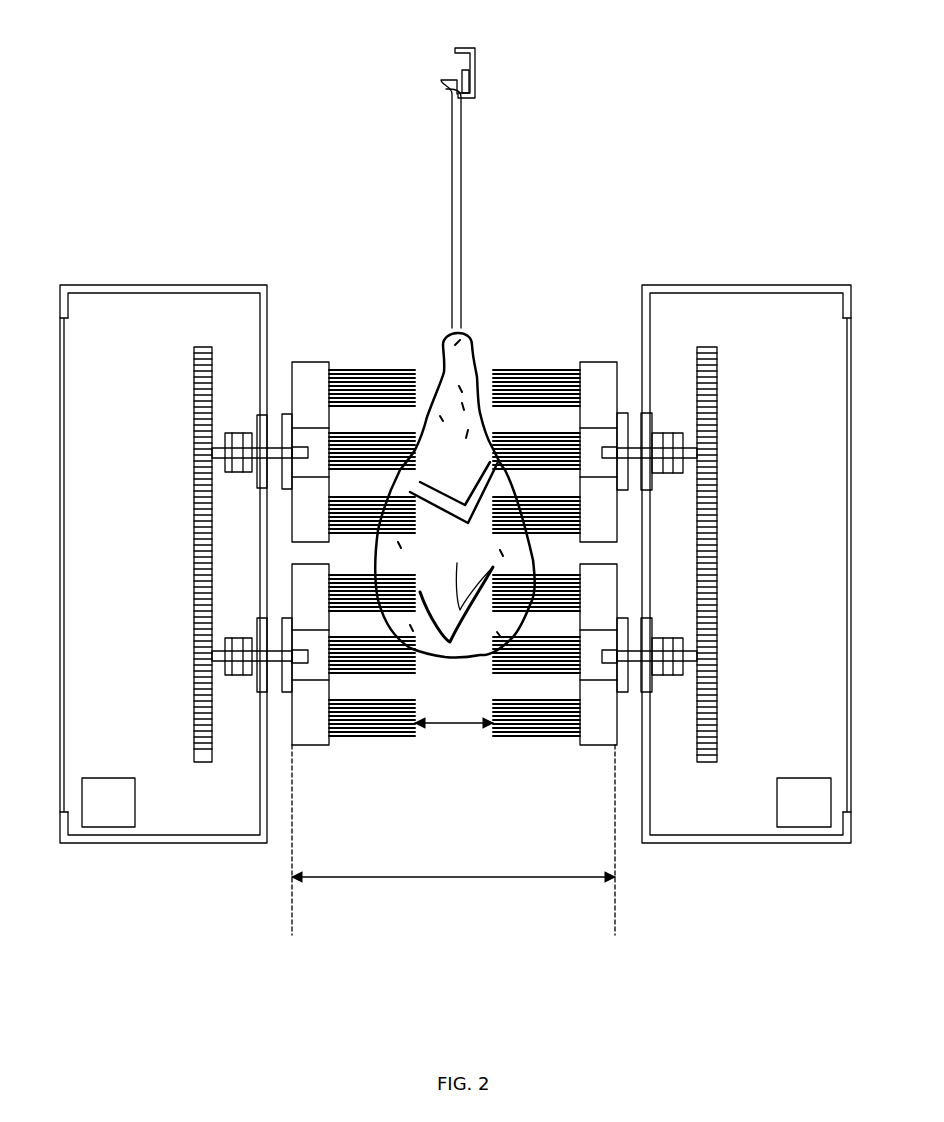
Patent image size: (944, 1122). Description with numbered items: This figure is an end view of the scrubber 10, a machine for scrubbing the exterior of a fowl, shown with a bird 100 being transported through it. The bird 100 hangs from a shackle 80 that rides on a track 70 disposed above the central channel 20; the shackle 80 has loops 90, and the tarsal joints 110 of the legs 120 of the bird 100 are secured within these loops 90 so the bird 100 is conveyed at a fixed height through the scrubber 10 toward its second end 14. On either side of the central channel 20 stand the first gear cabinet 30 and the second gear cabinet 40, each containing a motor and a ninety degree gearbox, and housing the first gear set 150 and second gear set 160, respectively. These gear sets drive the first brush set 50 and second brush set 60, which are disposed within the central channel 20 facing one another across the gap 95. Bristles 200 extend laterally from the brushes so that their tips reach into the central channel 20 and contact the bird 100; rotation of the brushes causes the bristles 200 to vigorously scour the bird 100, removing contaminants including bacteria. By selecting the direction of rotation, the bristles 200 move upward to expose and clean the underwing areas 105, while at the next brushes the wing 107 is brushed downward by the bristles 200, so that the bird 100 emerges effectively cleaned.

The scrubber 10 is at (153, 80).
The second end 14 is at (232, 843).
The central channel 20 is at (453, 840).
The first gear cabinet 30 is at (148, 802).
The second gear cabinet 40 is at (748, 803).
The first brush set 50 is at (312, 372).
The second brush set 60 is at (598, 372).
The track 70 is at (475, 55).
The shackle 80 is at (452, 200).
The loops 90 is at (437, 545).
The gap 95 is at (452, 723).
The bird 100 is at (410, 548).
The underwing areas 105 is at (510, 447).
The wing 107 is at (435, 640).
The tarsal joints 110 is at (470, 328).
The legs 120 is at (450, 447).
The first gear set 150 is at (203, 345).
The second gear set 160 is at (705, 345).
The bristles 200 is at (365, 370).